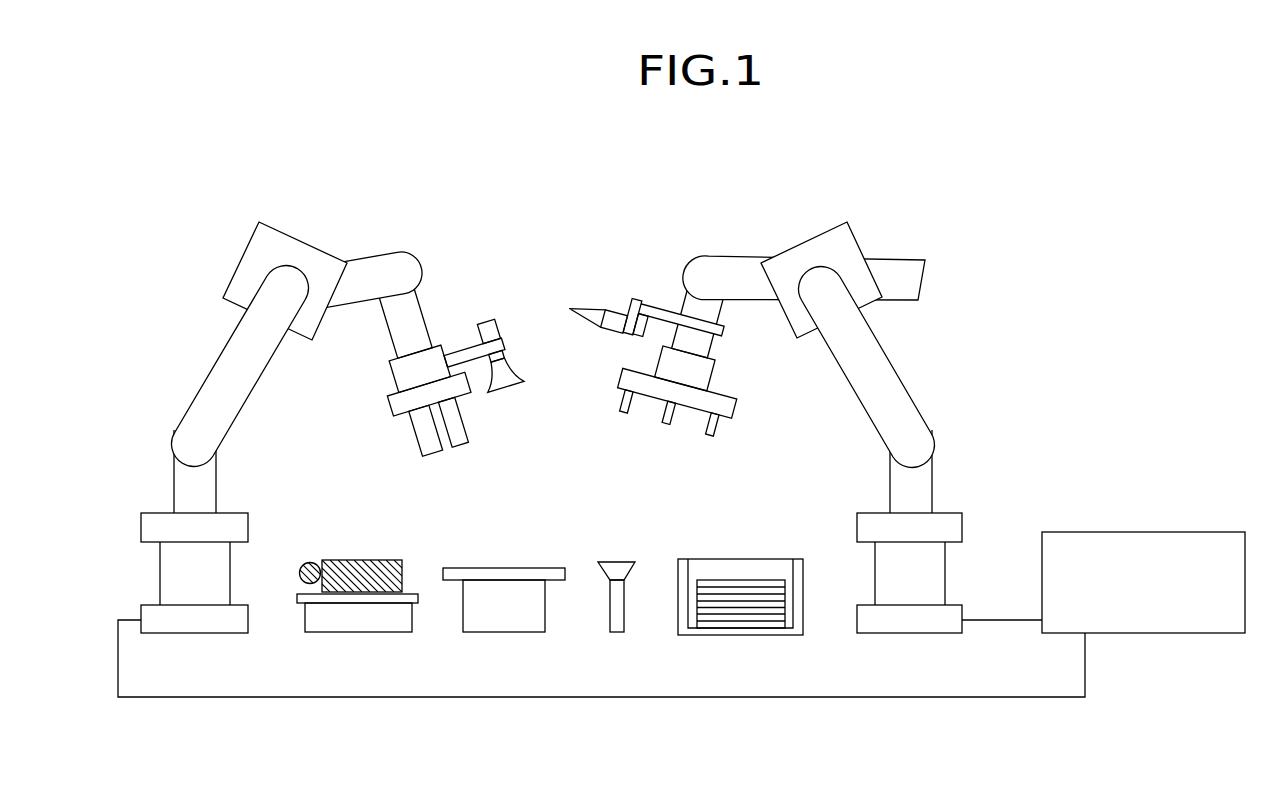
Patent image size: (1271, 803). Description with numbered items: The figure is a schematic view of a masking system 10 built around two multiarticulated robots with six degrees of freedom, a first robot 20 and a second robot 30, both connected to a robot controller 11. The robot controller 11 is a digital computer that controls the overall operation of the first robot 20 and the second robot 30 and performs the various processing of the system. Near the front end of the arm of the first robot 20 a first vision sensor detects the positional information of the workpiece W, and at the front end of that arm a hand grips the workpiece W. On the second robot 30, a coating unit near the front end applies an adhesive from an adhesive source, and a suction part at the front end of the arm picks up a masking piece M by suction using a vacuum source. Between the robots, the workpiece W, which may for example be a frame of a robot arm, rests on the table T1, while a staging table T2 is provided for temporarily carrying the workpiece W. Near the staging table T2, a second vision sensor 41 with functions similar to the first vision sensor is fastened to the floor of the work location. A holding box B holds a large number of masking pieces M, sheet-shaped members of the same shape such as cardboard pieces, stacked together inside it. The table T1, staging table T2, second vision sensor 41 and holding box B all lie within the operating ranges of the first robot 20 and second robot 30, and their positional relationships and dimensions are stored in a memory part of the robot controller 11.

The masking system 10 is at (1079, 283).
The robot controller 11 is at (1093, 531).
The first robot 20 is at (183, 269).
The second robot 30 is at (919, 326).
The second vision sensor 41 is at (620, 618).
The workpiece W is at (387, 567).
The table T1 is at (332, 625).
The staging table T2 is at (475, 625).
The masking piece M is at (747, 580).
The holding box B is at (800, 624).